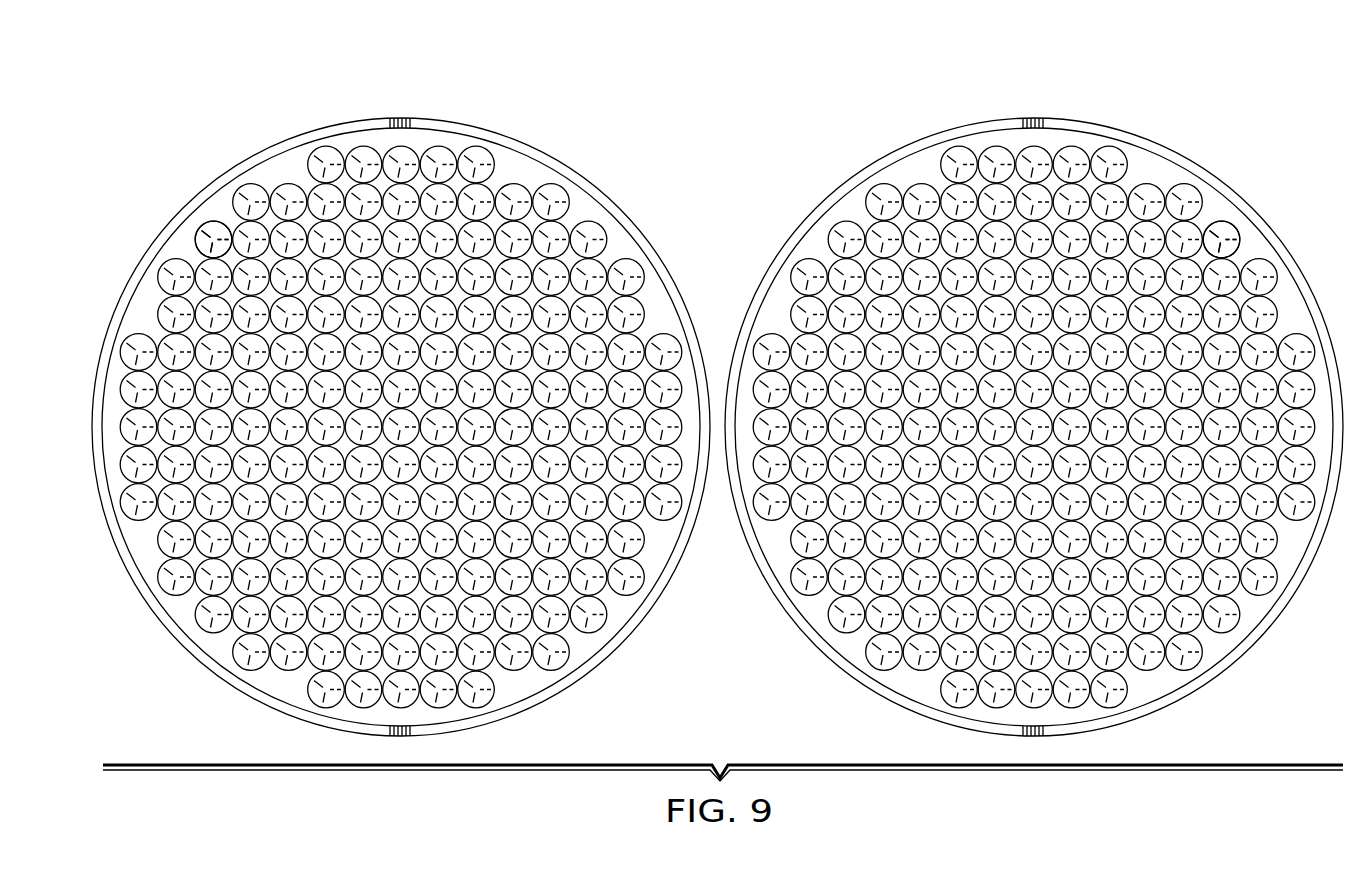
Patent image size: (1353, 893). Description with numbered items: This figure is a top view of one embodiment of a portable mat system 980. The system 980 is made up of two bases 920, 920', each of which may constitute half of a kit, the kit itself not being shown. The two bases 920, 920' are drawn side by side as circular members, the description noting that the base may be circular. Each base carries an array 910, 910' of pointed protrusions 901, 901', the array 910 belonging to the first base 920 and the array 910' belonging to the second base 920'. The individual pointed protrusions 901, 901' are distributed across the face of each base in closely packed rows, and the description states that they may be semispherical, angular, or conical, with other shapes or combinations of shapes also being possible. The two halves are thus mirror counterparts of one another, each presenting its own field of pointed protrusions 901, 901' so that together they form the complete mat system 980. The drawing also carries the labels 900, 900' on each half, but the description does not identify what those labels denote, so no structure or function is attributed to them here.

The wafer 900 is at (401, 411).
The pointed protrusion 901 is at (189, 196).
The array of pointed protrusions 910 is at (401, 401).
The base 920 is at (363, 401).
The second wafer 900' is at (1034, 411).
The pointed protrusion 901' is at (1249, 201).
The array of pointed protrusions 910' is at (1034, 399).
The base 920' is at (1073, 401).
The system 980 is at (616, 70).